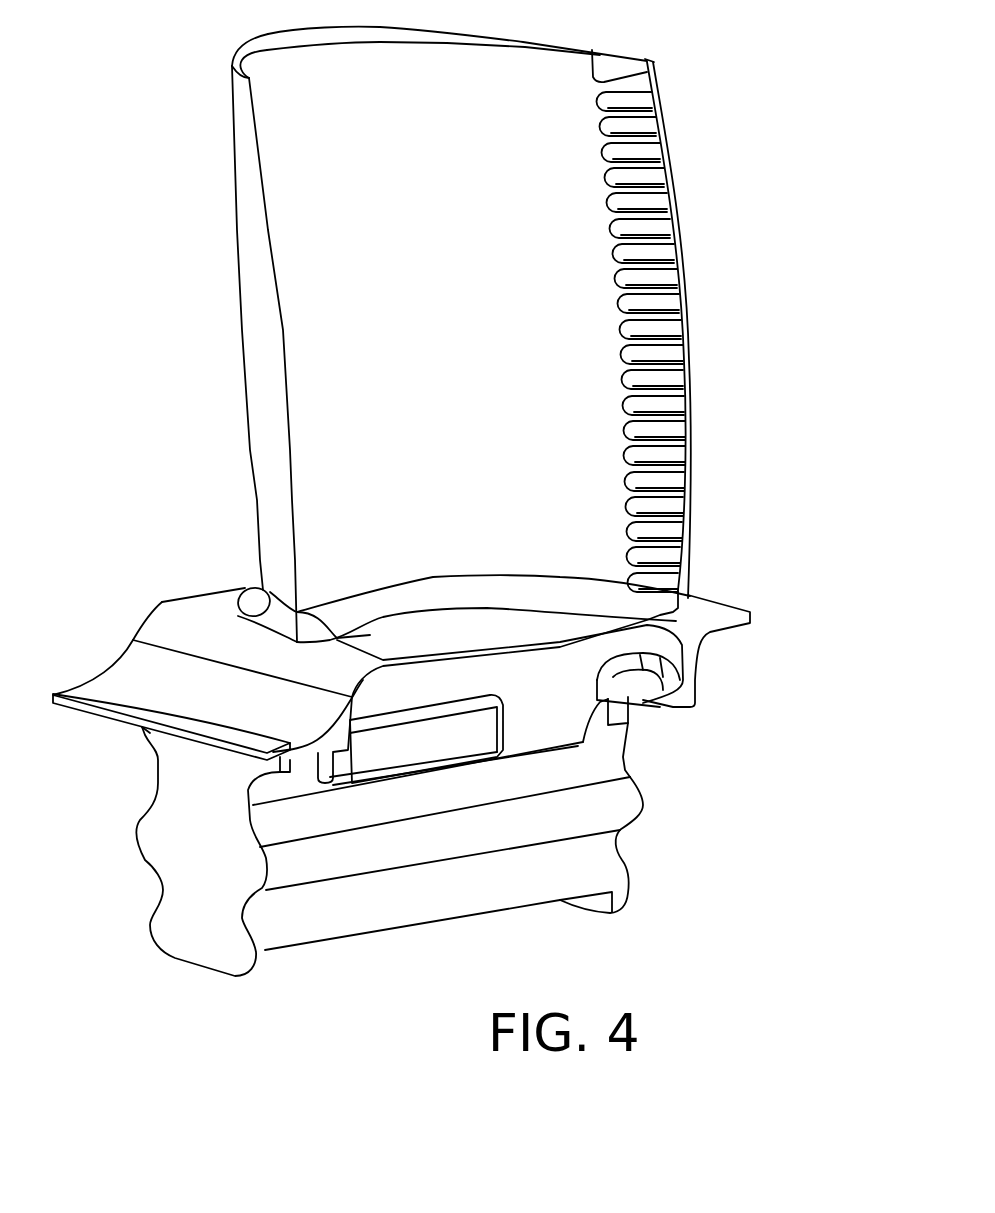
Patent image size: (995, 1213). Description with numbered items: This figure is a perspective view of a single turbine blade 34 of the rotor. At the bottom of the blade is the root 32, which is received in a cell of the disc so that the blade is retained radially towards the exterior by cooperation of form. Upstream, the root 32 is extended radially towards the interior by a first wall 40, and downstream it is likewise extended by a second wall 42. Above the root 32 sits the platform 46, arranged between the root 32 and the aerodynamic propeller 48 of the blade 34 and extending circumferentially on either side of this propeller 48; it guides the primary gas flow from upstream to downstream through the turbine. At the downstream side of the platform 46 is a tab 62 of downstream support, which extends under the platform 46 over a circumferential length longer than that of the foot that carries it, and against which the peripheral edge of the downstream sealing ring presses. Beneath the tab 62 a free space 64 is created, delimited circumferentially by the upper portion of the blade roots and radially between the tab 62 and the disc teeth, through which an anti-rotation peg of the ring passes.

The root 32 is at (138, 847).
The blade 34 is at (667, 107).
The first wall 40 is at (205, 953).
The second wall 42 is at (623, 903).
The platform 46 is at (214, 600).
The aerodynamic propeller 48 is at (288, 272).
The tab 62 is at (693, 660).
The free space 64 is at (643, 710).